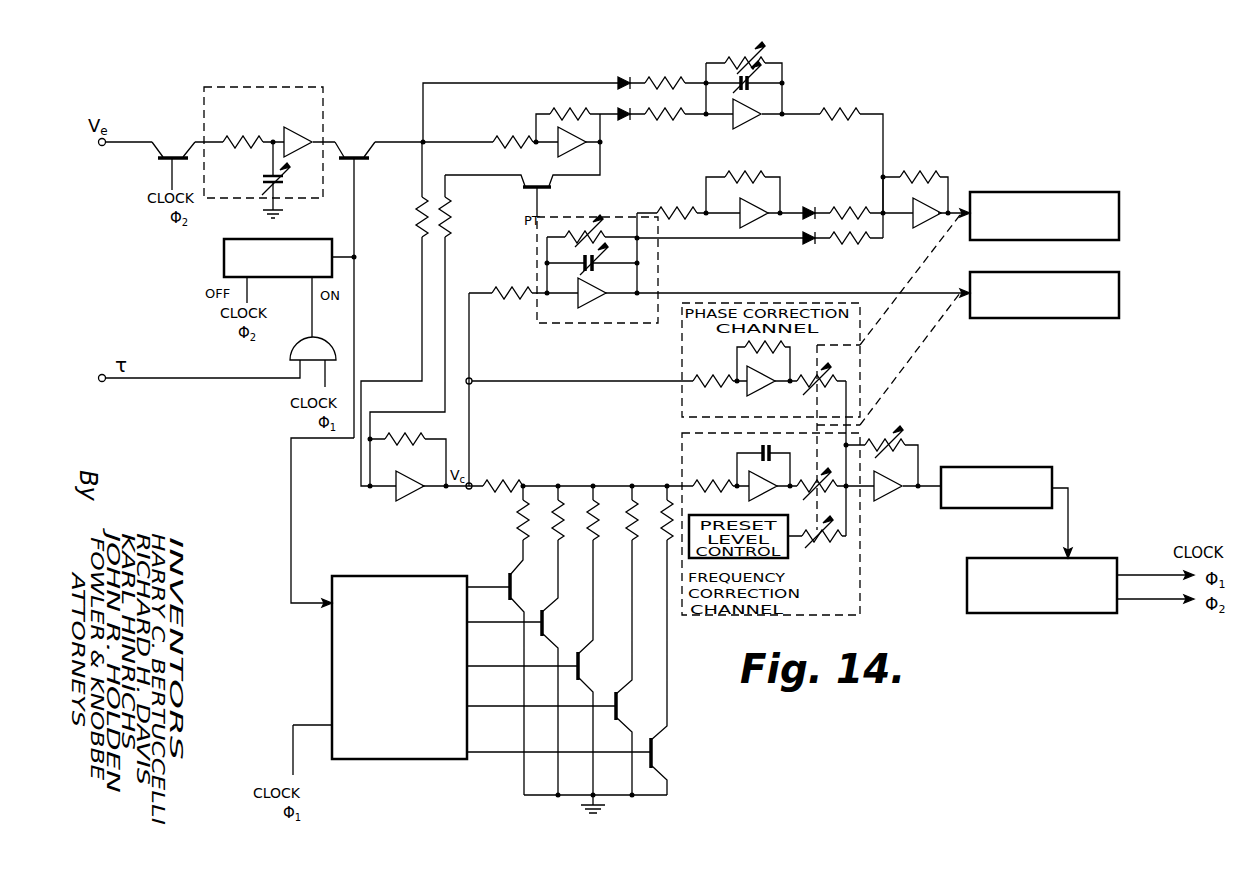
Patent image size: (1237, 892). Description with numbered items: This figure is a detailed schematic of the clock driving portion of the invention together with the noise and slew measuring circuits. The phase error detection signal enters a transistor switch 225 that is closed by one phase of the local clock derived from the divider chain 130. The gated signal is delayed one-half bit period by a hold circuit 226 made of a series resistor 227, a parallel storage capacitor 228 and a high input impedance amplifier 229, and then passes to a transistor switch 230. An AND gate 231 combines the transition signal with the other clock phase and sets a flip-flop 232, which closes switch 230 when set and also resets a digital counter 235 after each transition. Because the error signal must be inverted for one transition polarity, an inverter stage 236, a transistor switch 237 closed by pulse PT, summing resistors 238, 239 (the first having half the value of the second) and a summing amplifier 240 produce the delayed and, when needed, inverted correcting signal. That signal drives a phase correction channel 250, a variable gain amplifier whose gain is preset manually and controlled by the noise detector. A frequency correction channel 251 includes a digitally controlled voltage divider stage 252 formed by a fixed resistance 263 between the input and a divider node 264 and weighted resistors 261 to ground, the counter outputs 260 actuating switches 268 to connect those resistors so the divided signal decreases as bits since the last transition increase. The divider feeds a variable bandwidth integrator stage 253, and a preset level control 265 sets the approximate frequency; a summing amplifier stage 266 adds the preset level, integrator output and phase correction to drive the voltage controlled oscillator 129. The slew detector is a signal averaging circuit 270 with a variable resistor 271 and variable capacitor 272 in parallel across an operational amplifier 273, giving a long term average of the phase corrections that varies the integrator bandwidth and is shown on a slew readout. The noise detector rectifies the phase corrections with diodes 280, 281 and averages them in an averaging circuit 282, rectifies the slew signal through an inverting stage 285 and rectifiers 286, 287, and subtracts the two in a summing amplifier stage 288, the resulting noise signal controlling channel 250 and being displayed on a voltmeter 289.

The voltage controlled oscillator 129 is at (1020, 467).
The divider chain 130 is at (1112, 540).
The switch 225 is at (176, 154).
The hold circuit 226 is at (242, 92).
The resistor 227 is at (246, 140).
The storage capacitor 228 is at (280, 182).
The high input impedance amplifier 229 is at (316, 121).
The transistor switch 230 is at (368, 152).
The AND gate 231 is at (348, 330).
The flip-flop 232 is at (224, 258).
The digital counter 235 is at (332, 690).
The inverter stage 236 is at (525, 128).
The transistor switch 237 is at (546, 186).
The summing resistor 238 is at (448, 226).
The summing resistor 239 is at (418, 222).
The summing amplifier 240 is at (410, 500).
The phase correction channel 250 is at (705, 362).
The frequency correction channel 251 is at (830, 588).
The digitally controlled voltage divider stage 252 is at (690, 752).
The variable bandwidth integrator stage 253 is at (716, 467).
The outputs of counter 260 is at (512, 590).
The weighted resistors 261 is at (556, 550).
The fixed resistance 263 is at (505, 484).
The divider node 264 is at (556, 498).
The preset level control 265 is at (790, 556).
The summing amplifier stage 266 is at (887, 506).
The switches 268 is at (545, 625).
The signal averaging circuit 270 is at (535, 320).
The variable resistor 271 is at (597, 261).
The variable capacitor 272 is at (592, 268).
The operational amplifier 273 is at (592, 312).
The diode 280 is at (618, 78).
The diode 281 is at (628, 120).
The averaging circuit 282 is at (760, 120).
The inverting stage 285 is at (718, 199).
The rectifier 286 is at (828, 190).
The rectifier 287 is at (808, 240).
The summing amplifier stage 288 is at (915, 199).
The voltmeter 289 is at (1050, 192).